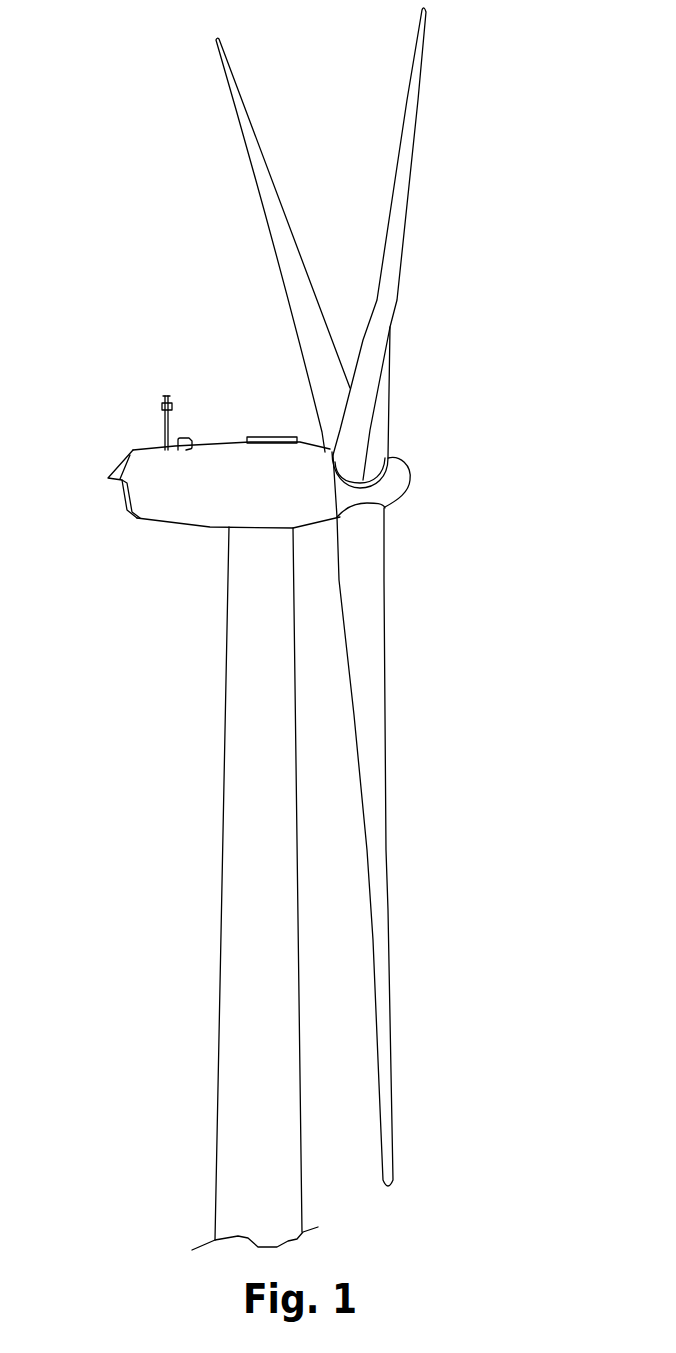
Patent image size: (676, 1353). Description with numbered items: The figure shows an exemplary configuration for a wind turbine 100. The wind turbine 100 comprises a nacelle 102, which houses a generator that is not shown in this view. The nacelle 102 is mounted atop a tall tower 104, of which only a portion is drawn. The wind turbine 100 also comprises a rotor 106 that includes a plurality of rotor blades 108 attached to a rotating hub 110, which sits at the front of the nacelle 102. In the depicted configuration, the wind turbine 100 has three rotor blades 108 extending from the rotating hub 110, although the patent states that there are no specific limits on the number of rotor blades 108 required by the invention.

The wind turbine 100 is at (158, 221).
The nacelle 102 is at (177, 522).
The tower 104 is at (225, 758).
The rotor 106 is at (462, 281).
The rotor blade 108 is at (248, 118).
The rotating hub 110 is at (407, 495).